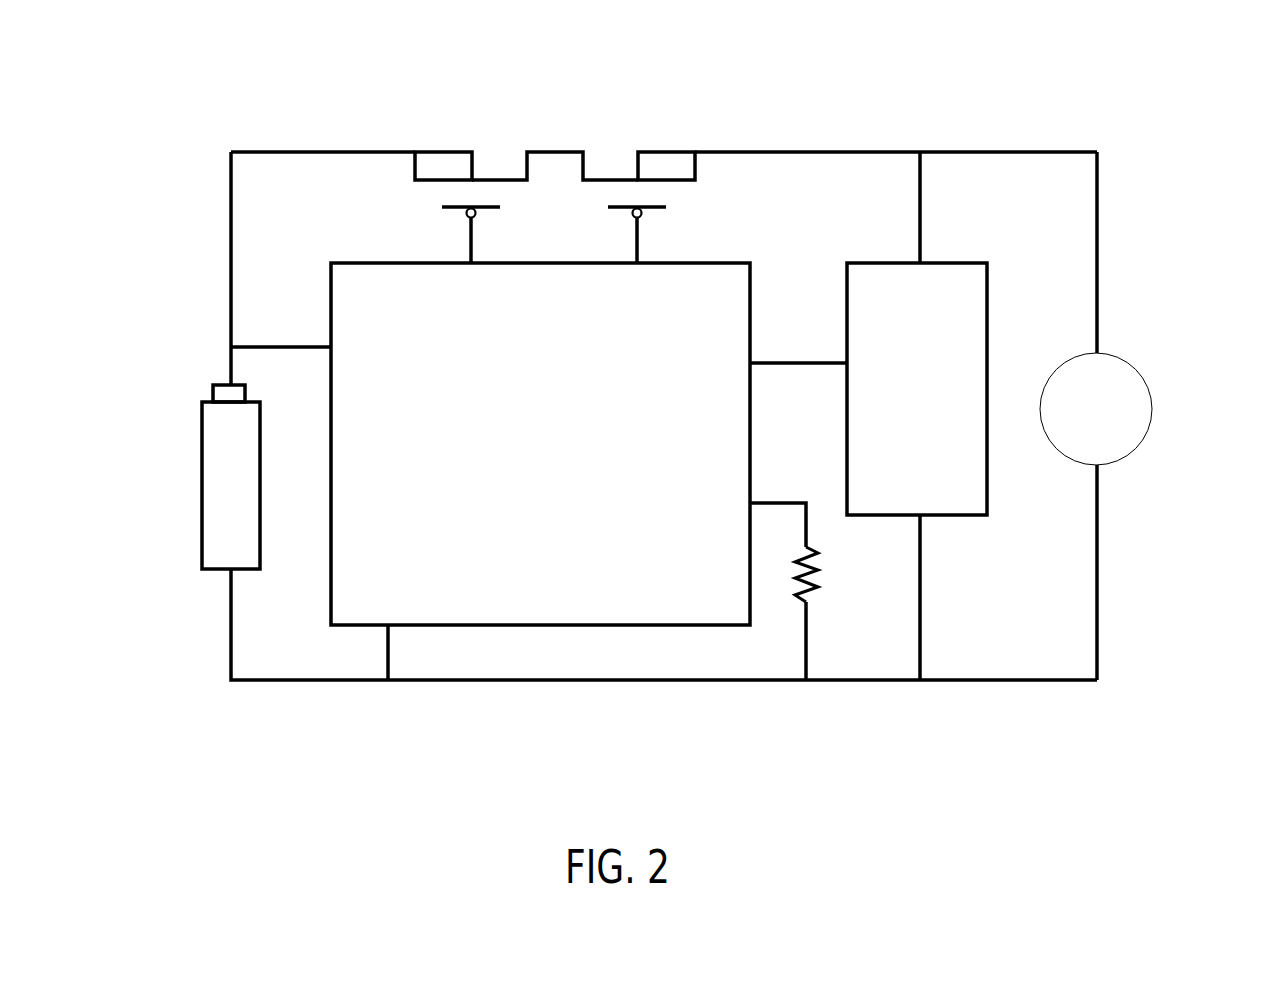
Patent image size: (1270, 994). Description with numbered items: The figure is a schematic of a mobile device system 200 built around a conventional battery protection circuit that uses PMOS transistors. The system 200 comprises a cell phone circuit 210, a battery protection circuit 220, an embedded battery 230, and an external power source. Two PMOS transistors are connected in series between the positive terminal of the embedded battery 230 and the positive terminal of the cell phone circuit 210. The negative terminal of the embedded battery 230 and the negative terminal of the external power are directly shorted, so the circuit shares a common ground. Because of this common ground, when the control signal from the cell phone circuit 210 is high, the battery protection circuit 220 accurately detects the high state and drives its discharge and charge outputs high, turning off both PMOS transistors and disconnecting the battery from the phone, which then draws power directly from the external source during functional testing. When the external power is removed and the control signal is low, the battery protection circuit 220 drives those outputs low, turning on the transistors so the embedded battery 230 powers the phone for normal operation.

The mobile device system 200 is at (1081, 61).
The cell phone circuit 210 is at (937, 487).
The battery protection circuit 220 is at (565, 547).
The embedded battery 230 is at (248, 497).